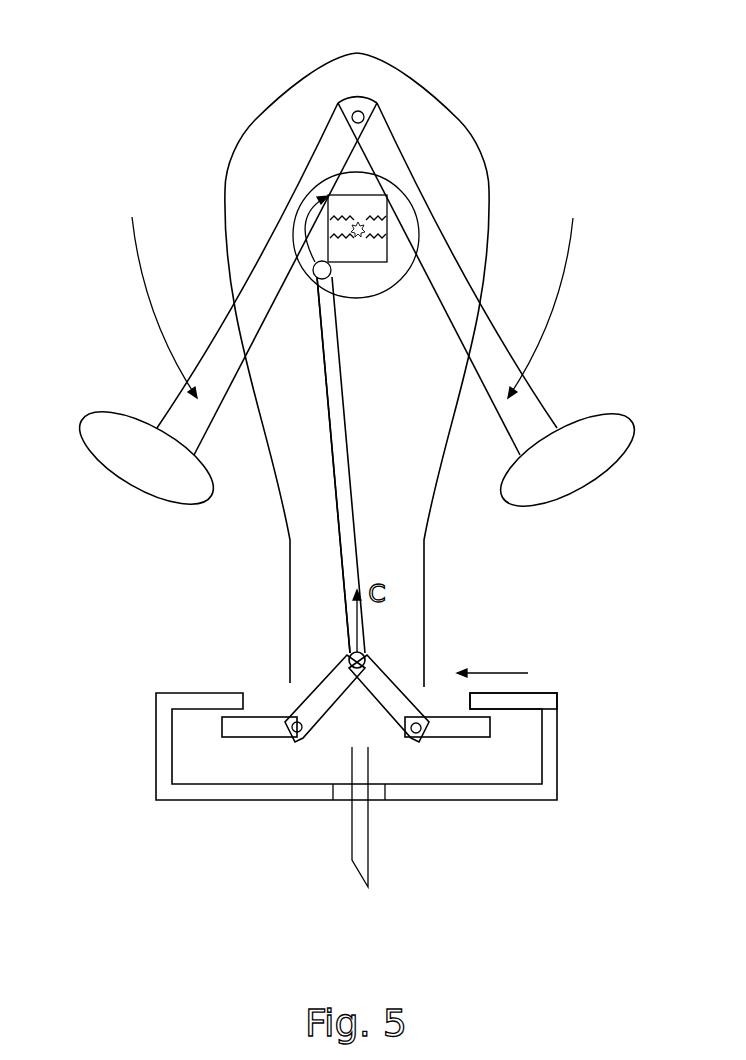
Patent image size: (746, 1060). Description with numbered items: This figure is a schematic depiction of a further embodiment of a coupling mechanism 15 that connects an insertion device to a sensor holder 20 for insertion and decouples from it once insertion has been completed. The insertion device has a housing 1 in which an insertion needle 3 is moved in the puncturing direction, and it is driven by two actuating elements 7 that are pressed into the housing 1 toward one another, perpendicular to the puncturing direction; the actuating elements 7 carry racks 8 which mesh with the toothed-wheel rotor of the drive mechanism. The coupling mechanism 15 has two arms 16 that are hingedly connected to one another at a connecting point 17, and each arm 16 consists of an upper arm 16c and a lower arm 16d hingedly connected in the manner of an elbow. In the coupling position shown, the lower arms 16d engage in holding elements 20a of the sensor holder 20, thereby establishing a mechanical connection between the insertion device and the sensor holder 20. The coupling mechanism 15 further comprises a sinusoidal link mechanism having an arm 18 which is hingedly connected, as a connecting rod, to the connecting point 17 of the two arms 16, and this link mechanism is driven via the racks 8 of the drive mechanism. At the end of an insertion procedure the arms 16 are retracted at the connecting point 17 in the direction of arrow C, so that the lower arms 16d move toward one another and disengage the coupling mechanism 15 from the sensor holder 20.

The housing 1 is at (440, 120).
The insertion needle 3 is at (357, 855).
The actuating elements 7 is at (122, 478).
The racks 8 is at (367, 243).
The coupling mechanism 15 is at (332, 505).
The arms 16 is at (403, 688).
The upper arm 16c is at (313, 700).
The lower arm 16d is at (232, 748).
The connecting point 17 is at (350, 657).
The arm 18 is at (332, 463).
The sensor holder 20 is at (243, 802).
The holding elements 20a is at (530, 695).